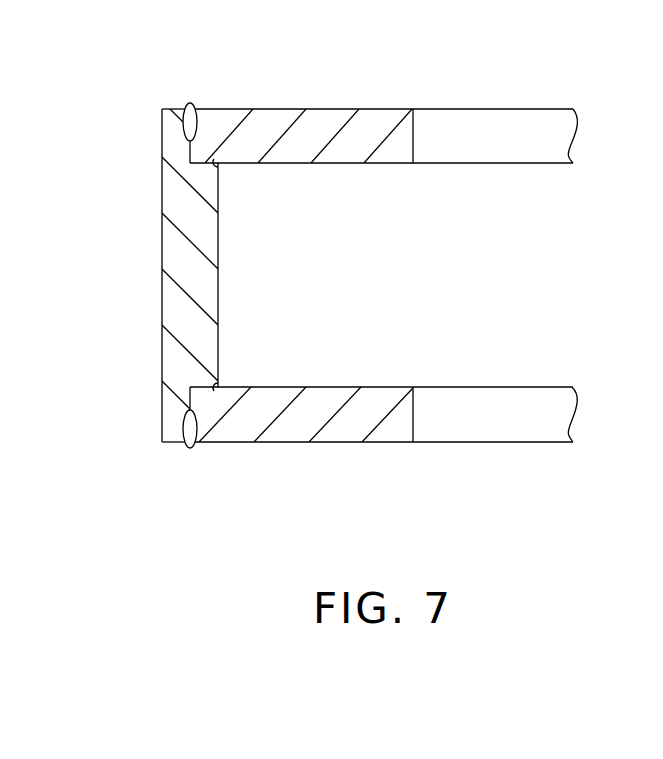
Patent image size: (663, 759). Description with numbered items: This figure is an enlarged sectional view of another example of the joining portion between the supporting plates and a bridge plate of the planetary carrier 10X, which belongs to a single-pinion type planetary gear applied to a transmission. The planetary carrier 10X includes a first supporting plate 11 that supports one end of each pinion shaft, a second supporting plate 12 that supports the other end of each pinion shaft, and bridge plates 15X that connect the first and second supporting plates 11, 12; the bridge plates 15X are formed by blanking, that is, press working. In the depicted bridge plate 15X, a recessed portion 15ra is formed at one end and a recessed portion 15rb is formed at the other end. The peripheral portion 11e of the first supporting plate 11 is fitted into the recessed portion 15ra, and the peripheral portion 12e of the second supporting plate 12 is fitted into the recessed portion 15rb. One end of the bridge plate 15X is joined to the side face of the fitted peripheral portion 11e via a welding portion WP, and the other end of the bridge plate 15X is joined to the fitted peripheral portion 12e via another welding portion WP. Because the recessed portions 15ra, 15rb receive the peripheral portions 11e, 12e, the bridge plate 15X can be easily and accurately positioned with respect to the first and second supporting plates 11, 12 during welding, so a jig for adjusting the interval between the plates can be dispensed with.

The planetary carrier 10X is at (127, 91).
The first supporting plate 11 is at (350, 126).
The peripheral portion of the first supporting plate 11e is at (218, 127).
The second supporting plate 12 is at (352, 427).
The peripheral portion of the second supporting plate 12e is at (222, 425).
The bridge plate 15X is at (175, 266).
The recessed portion 15ra is at (219, 165).
The recessed portion 15rb is at (221, 386).
The welding portion WP is at (183, 126).